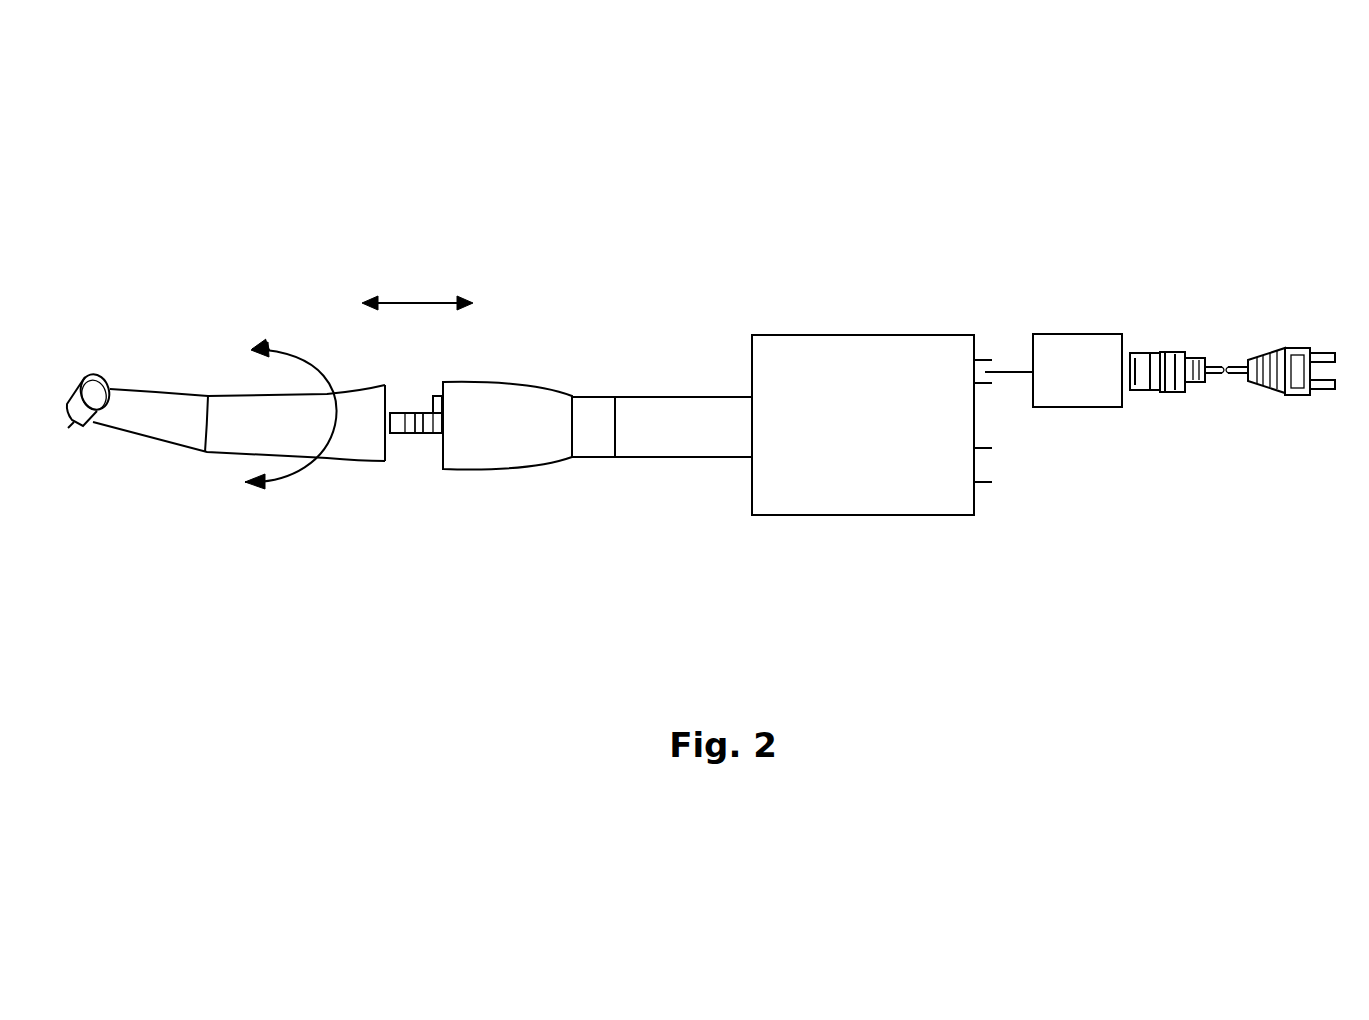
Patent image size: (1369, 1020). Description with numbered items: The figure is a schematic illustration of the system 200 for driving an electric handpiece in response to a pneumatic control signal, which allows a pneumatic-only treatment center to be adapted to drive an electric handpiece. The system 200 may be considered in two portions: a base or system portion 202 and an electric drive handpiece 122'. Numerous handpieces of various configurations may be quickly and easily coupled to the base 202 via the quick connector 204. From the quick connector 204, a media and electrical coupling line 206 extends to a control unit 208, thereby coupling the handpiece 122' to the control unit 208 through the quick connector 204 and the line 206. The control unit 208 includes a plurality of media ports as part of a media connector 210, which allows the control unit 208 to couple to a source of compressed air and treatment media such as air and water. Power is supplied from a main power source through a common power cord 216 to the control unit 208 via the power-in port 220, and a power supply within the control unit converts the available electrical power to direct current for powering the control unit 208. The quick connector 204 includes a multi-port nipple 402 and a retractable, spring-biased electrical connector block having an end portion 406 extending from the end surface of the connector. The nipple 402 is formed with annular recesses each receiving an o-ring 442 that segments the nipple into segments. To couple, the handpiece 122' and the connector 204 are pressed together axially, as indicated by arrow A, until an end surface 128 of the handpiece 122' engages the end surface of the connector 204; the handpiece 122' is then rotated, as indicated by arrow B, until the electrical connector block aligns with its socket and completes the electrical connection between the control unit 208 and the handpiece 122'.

The system 200 is at (985, 192).
The base or system portion 202 is at (1306, 589).
The electric drive handpiece 122' is at (270, 399).
The end surface of the handpiece 128 is at (385, 388).
The multi-port nipple 402 is at (397, 429).
The o-ring 442 is at (420, 431).
The end portion of the electrical connector block 406 is at (436, 405).
The quick connector 204 is at (505, 393).
The media and electrical coupling line 206 is at (655, 397).
The control unit 208 is at (898, 333).
The power-in port 220 is at (988, 357).
The power cord 216 is at (1085, 333).
The media connector 210 is at (983, 484).